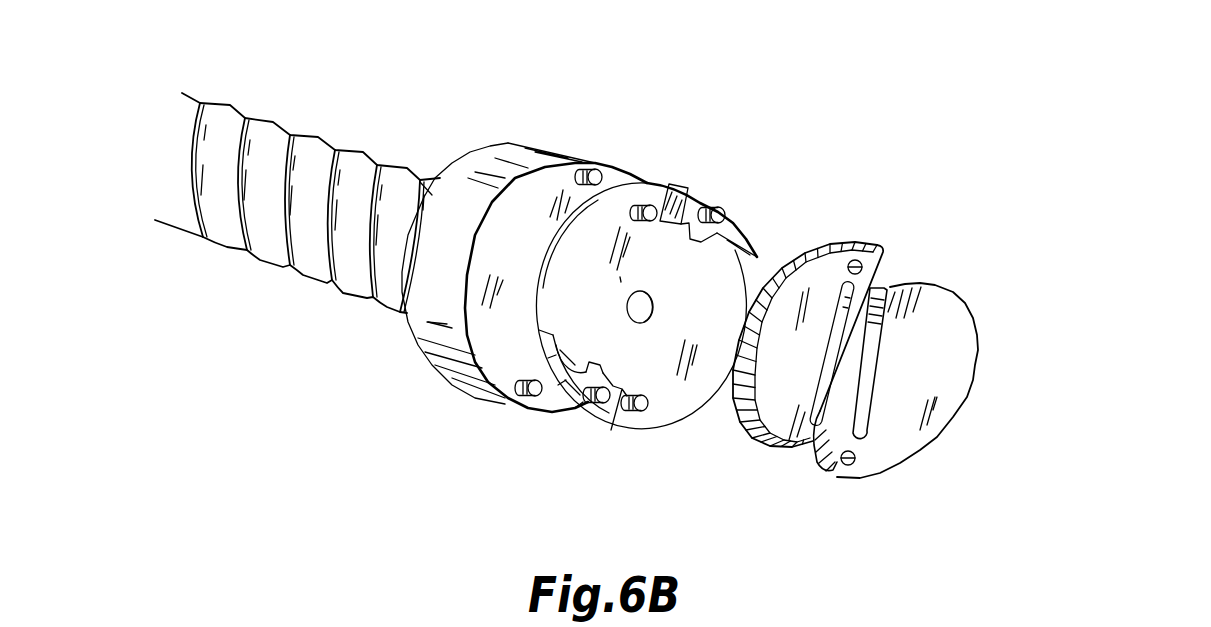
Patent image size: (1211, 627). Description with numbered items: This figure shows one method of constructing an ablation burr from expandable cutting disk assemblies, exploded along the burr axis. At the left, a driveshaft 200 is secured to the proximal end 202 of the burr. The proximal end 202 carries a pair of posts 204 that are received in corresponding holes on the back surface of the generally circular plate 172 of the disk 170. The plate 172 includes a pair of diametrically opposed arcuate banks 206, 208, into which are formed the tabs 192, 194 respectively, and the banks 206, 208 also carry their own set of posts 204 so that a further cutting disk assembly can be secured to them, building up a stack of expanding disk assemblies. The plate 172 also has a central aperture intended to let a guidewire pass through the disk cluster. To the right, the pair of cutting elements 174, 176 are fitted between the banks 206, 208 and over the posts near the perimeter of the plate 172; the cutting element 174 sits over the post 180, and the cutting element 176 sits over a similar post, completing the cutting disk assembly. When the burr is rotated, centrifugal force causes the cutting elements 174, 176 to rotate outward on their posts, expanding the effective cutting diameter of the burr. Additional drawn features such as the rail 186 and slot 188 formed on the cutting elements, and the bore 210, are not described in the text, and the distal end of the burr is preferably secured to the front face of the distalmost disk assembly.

The disk 170 is at (826, 104).
The circular plate 172 is at (690, 185).
The cutting element 174 is at (960, 345).
The cutting element 176 is at (773, 417).
The post 180 is at (643, 407).
The guide rail 186 is at (890, 300).
The slot 188 is at (821, 421).
The tab 192 is at (690, 240).
The tab 194 is at (594, 365).
The driveshaft 200 is at (317, 122).
The proximal end 202 is at (548, 145).
The posts 204 is at (598, 172).
The arcuate bank 206 is at (760, 240).
The arcuate bank 208 is at (574, 417).
The central bore 210 is at (627, 306).